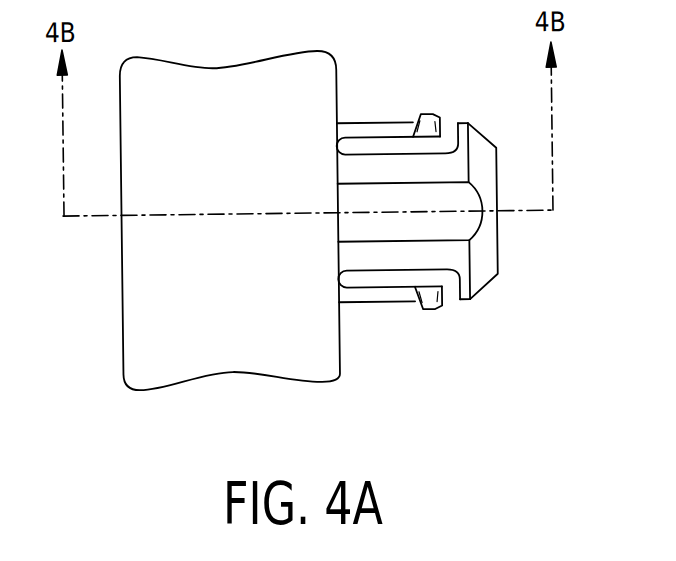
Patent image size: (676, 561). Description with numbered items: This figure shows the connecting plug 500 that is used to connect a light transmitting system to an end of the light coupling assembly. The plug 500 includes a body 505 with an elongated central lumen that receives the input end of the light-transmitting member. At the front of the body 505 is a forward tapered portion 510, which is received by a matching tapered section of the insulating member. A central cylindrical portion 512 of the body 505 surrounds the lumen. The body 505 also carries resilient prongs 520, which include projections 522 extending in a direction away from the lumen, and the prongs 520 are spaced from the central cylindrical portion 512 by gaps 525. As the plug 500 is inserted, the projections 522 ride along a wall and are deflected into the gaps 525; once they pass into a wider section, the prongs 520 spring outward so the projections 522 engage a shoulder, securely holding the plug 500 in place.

The connecting plug 500 is at (338, 53).
The body 505 is at (316, 370).
The forward tapered portion 510 is at (491, 287).
The central cylindrical portion 512 is at (464, 121).
The resilient prongs 520 is at (396, 121).
The projections 522 is at (428, 112).
The gaps 525 is at (379, 279).